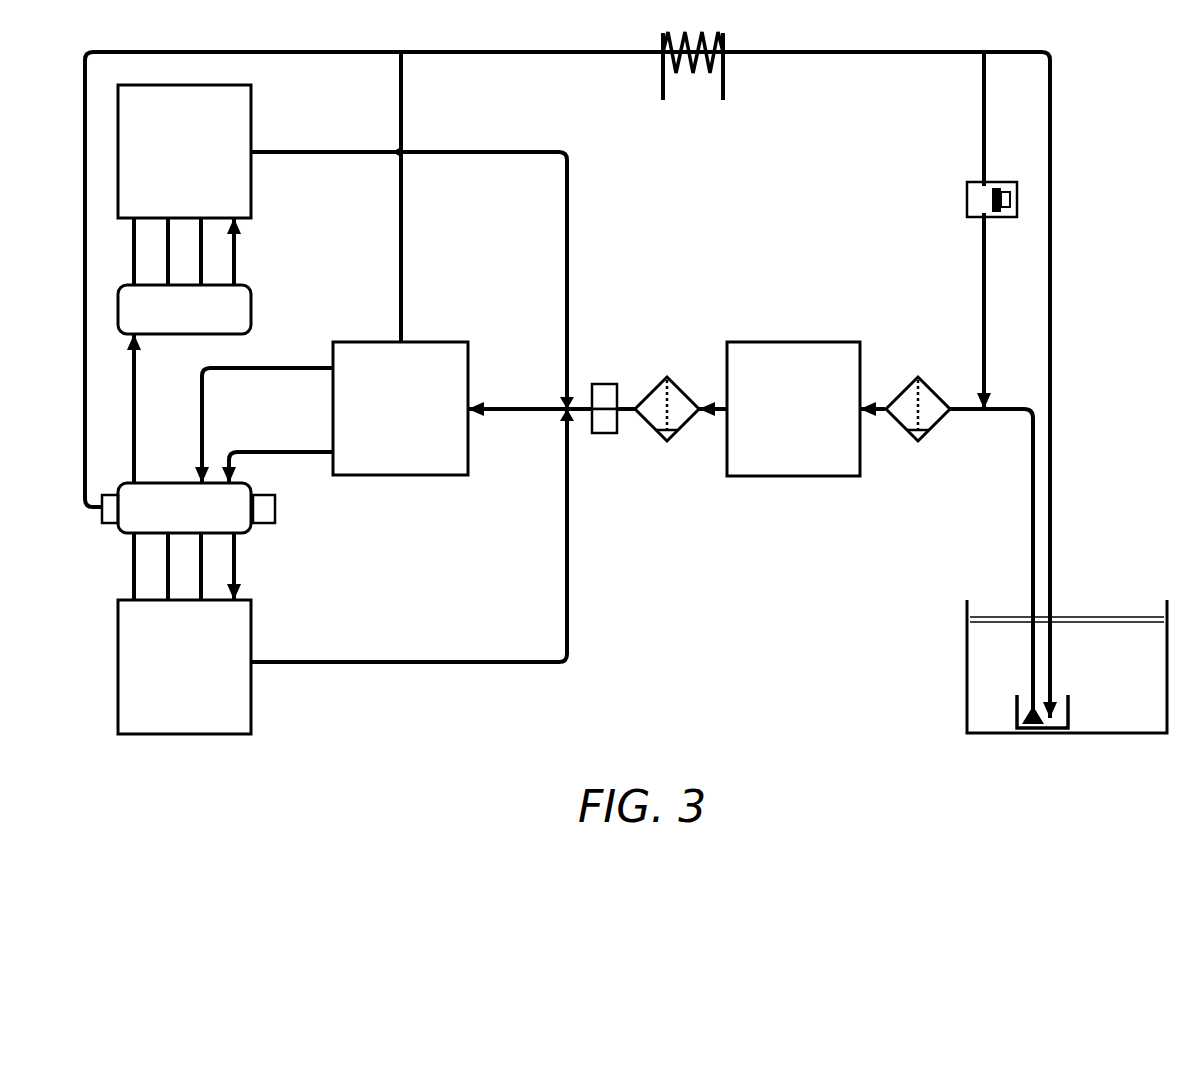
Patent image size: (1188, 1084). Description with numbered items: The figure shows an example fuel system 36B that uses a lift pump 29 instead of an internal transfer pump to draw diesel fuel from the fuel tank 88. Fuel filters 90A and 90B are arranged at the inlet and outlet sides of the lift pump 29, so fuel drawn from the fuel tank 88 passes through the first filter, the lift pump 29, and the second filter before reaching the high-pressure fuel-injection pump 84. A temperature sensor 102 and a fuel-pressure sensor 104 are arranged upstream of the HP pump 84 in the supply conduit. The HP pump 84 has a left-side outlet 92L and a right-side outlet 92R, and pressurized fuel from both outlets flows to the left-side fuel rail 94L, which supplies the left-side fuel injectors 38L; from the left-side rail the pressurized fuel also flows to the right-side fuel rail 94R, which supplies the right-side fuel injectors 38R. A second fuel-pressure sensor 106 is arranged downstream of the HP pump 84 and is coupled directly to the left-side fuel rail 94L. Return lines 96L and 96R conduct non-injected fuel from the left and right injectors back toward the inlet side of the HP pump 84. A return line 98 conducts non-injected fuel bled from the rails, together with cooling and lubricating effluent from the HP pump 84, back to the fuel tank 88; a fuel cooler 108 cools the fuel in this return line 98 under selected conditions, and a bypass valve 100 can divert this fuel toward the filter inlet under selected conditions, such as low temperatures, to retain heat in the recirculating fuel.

The fuel system 36B is at (1099, 137).
The right-side fuel injectors 38R is at (184, 151).
The left-side fuel injectors 38L is at (184, 667).
The right-side fuel rail 94R is at (184, 276).
The left-side fuel rail 94L is at (184, 467).
The right-side return line 96R is at (303, 155).
The left-side return line 96L is at (308, 662).
The right-side outlet 92R is at (302, 366).
The left-side outlet 92L is at (307, 452).
The high-pressure fuel-injection pump 84 is at (462, 263).
The temperature sensor 102 is at (605, 383).
The fuel-pressure sensor 104 is at (606, 433).
The fuel filter 90B is at (690, 387).
The fuel filter 90A is at (941, 387).
The lift pump 29 is at (793, 409).
The bypass valve 100 is at (961, 178).
The return line 98 is at (792, 55).
The fuel cooler 108 is at (655, 73).
The fuel-pressure sensor 106 is at (265, 523).
The fuel tank 88 is at (1058, 571).